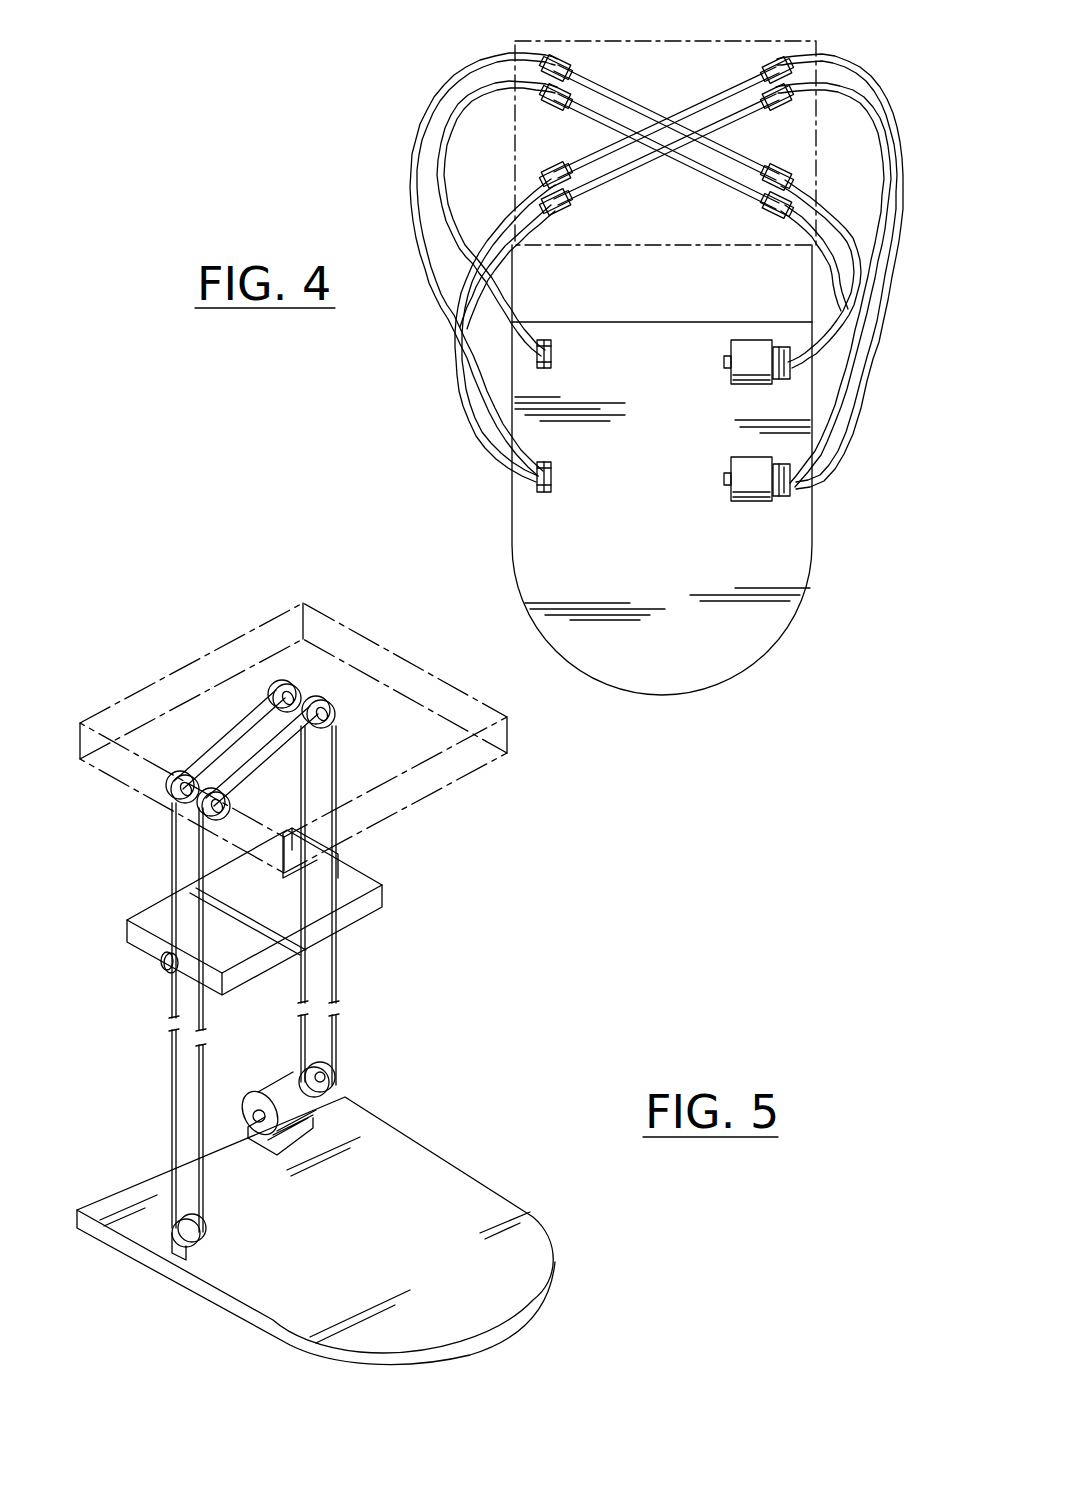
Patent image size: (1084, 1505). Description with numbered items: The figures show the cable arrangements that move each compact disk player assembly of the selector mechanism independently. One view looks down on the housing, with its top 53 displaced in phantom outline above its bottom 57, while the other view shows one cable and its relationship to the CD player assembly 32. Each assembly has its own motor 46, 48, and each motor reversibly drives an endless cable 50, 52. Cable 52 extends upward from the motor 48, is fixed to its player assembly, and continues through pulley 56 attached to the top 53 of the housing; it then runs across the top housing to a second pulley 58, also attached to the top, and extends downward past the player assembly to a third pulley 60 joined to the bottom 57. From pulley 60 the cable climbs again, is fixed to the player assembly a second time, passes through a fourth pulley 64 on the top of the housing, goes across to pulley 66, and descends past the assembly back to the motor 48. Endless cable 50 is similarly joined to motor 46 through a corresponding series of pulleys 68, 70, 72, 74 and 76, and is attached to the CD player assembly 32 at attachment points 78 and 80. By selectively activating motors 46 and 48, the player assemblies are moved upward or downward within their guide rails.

In FIG. 5, the CD player assembly 32 is at (258, 938).
In FIG. 4, the motor 46 is at (745, 384).
In FIG. 5, the motor 46 is at (316, 1104).
In FIG. 4, the motor 48 is at (745, 497).
In FIG. 4, the endless cable 50 is at (893, 270).
In FIG. 4, the endless cable 52 is at (876, 378).
In FIG. 4, the top of the housing 53 is at (694, 208).
In FIG. 4, the pulley 56 is at (792, 178).
In FIG. 4, the bottom of the housing 57 is at (678, 572).
In FIG. 4, the second pulley 58 is at (572, 68).
In FIG. 4, the third pulley 60 is at (552, 358).
In FIG. 4, the fourth pulley 64 is at (556, 108).
In FIG. 4, the pulley 66 is at (770, 212).
In FIG. 4, the pulley 68 is at (790, 110).
In FIG. 5, the pulley 68 is at (326, 700).
In FIG. 4, the pulley 70 is at (560, 212).
In FIG. 5, the pulley 70 is at (210, 812).
In FIG. 4, the pulley 72 is at (552, 486).
In FIG. 5, the pulley 72 is at (174, 1232).
In FIG. 4, the pulley 74 is at (548, 170).
In FIG. 5, the pulley 74 is at (176, 792).
In FIG. 4, the pulley 76 is at (770, 66).
In FIG. 5, the pulley 76 is at (294, 684).
In FIG. 5, the attachment point 78 is at (332, 868).
In FIG. 5, the attachment point 80 is at (168, 974).